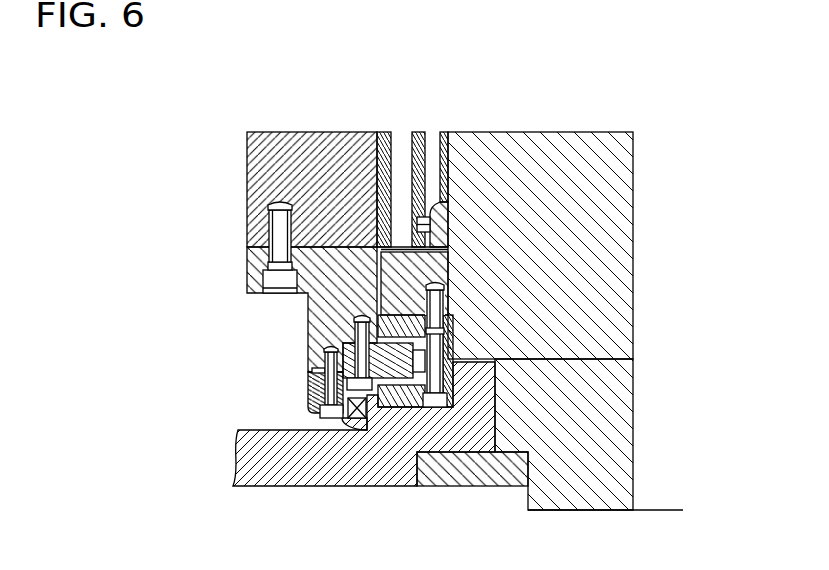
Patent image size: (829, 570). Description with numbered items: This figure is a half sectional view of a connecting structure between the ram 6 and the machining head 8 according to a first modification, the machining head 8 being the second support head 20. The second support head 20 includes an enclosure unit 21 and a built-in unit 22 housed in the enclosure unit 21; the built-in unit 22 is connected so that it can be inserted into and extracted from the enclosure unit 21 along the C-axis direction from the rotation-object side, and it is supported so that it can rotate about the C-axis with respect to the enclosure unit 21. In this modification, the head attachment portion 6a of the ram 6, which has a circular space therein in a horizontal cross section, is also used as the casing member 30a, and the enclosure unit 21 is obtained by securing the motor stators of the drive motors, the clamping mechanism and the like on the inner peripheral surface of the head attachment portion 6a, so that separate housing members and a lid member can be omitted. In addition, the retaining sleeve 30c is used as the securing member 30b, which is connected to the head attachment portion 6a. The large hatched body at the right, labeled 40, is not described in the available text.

The enclosure unit 21 is at (243, 130).
The ram 6 is at (353, 132).
The machining head 8 is at (544, 207).
The second support head 20 is at (533, 131).
The bearing housing 40 is at (622, 207).
The casing member 30a is at (207, 229).
The head attachment portion 6a is at (258, 198).
The securing member 30b is at (242, 309).
The retaining sleeve 30c is at (258, 277).
The built-in unit 22 is at (296, 356).